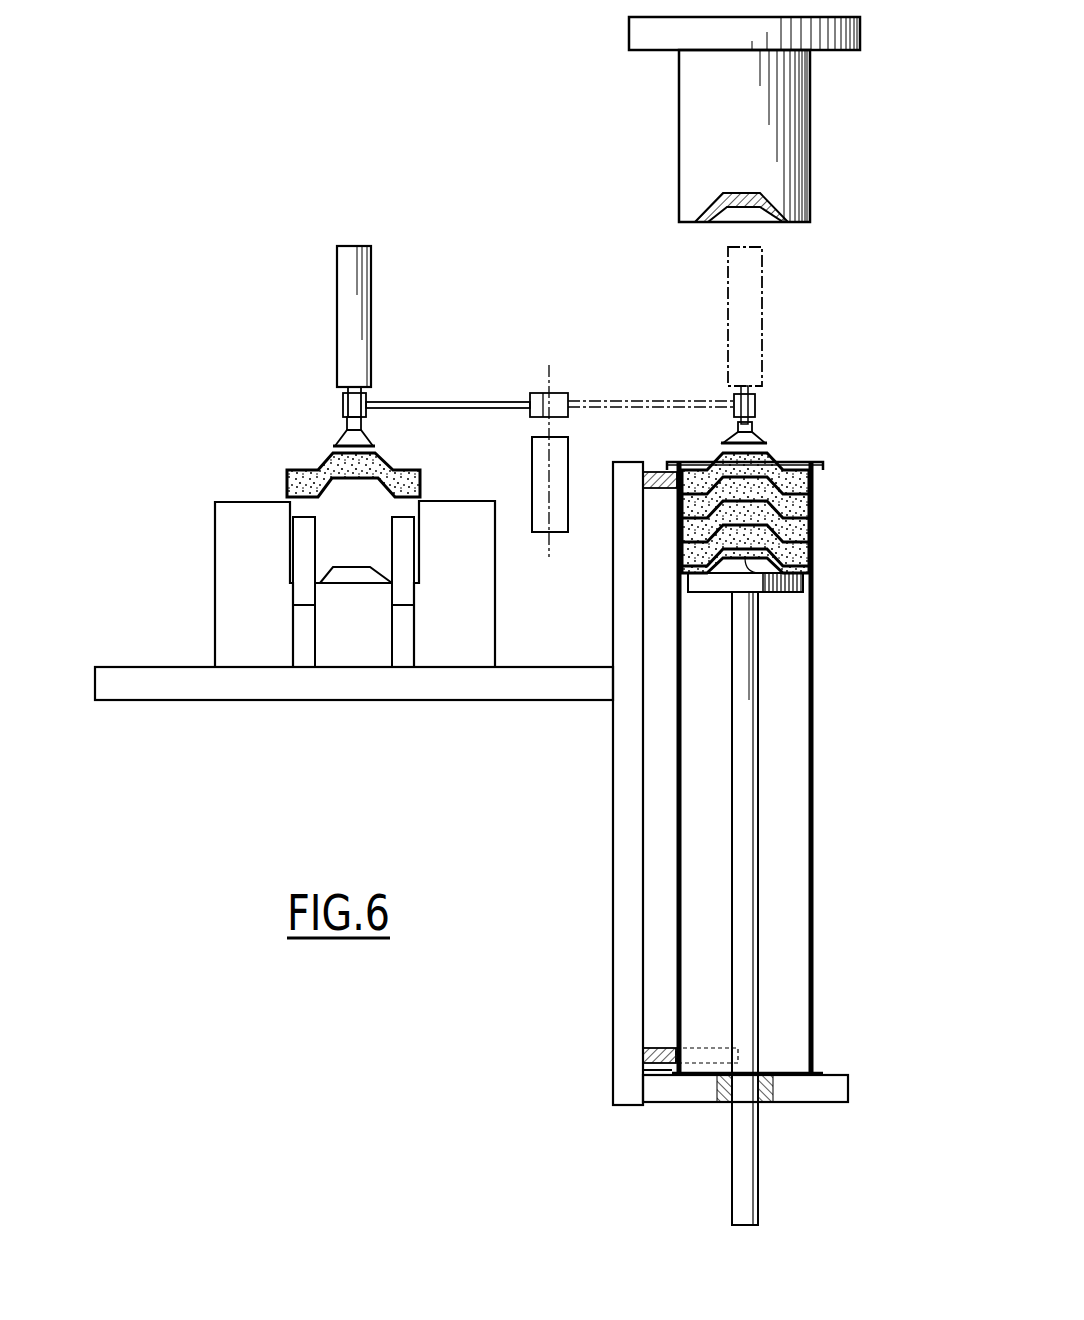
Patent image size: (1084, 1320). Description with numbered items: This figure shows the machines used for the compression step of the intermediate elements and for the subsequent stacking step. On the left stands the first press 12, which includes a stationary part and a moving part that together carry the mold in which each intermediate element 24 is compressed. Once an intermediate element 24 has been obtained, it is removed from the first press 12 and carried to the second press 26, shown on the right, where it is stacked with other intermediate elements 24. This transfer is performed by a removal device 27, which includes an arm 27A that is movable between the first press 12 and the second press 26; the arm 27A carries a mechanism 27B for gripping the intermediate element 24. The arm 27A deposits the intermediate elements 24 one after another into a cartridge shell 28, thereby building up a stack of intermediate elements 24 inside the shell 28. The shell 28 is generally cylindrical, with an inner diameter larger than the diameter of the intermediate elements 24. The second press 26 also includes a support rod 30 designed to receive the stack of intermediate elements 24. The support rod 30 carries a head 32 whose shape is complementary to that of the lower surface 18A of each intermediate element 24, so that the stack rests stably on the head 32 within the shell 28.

The first press 12 is at (200, 578).
The lower surface 18A is at (812, 566).
The intermediate element 24 is at (300, 471).
The second press 26 is at (832, 396).
The removal device 27 is at (417, 401).
The arm 27A is at (442, 400).
The mechanism for gripping 27B is at (328, 427).
The cartridge shell 28 is at (812, 737).
The support rod 30 is at (745, 785).
The head 32 is at (765, 590).